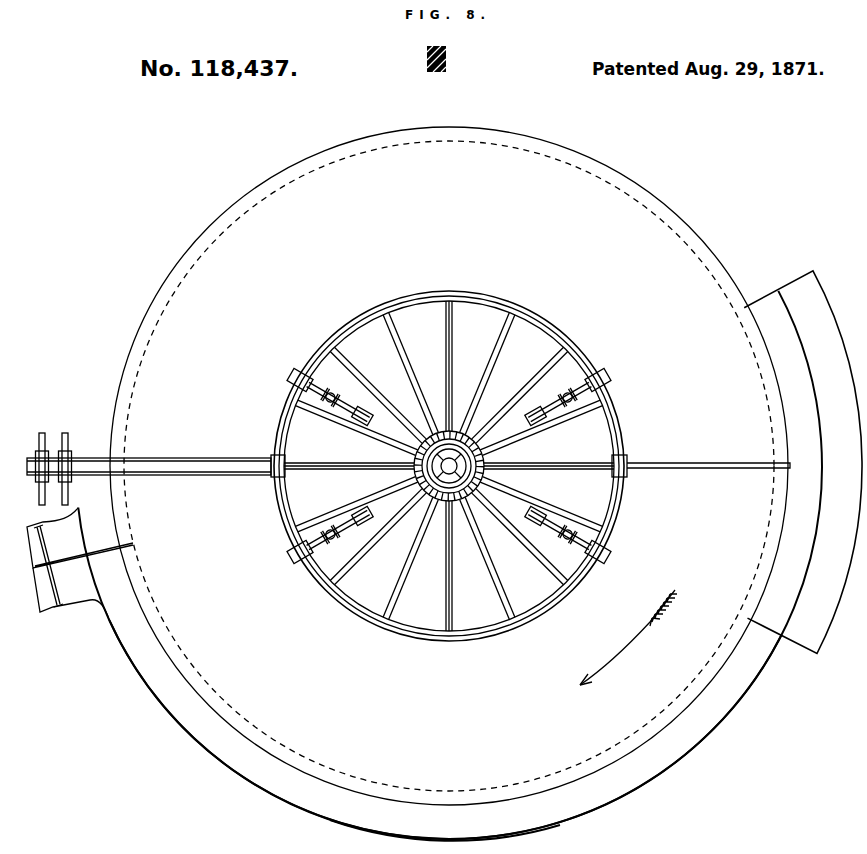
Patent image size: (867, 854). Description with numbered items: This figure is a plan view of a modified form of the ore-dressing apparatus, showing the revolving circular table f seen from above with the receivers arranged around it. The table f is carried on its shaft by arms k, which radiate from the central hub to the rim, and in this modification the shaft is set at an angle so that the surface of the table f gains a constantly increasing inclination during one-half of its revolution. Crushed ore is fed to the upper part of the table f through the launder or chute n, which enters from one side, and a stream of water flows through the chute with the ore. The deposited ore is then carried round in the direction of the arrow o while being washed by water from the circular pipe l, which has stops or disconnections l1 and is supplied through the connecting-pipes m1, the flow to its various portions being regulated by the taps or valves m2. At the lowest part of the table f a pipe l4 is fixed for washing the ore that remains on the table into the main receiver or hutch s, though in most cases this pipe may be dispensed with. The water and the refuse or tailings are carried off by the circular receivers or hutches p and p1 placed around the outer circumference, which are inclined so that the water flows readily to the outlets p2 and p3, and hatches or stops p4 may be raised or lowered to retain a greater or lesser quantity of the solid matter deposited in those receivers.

The circular table f is at (449, 466).
The receiver or hutch p is at (450, 483).
The receiver or hutch p1 is at (445, 823).
The outlet p2 is at (80, 538).
The outlet p3 is at (71, 594).
The hatches or stops p4 is at (49, 566).
The launder or chute n is at (149, 469).
The circular pipe l is at (449, 458).
The stops or disconnections l1 is at (455, 485).
The pipe l4 is at (708, 456).
The arms k is at (449, 466).
The connecting-pipes m1 is at (449, 465).
The taps or valves m2 is at (450, 458).
The arrow o is at (628, 637).
The receiver or hutch s is at (803, 462).